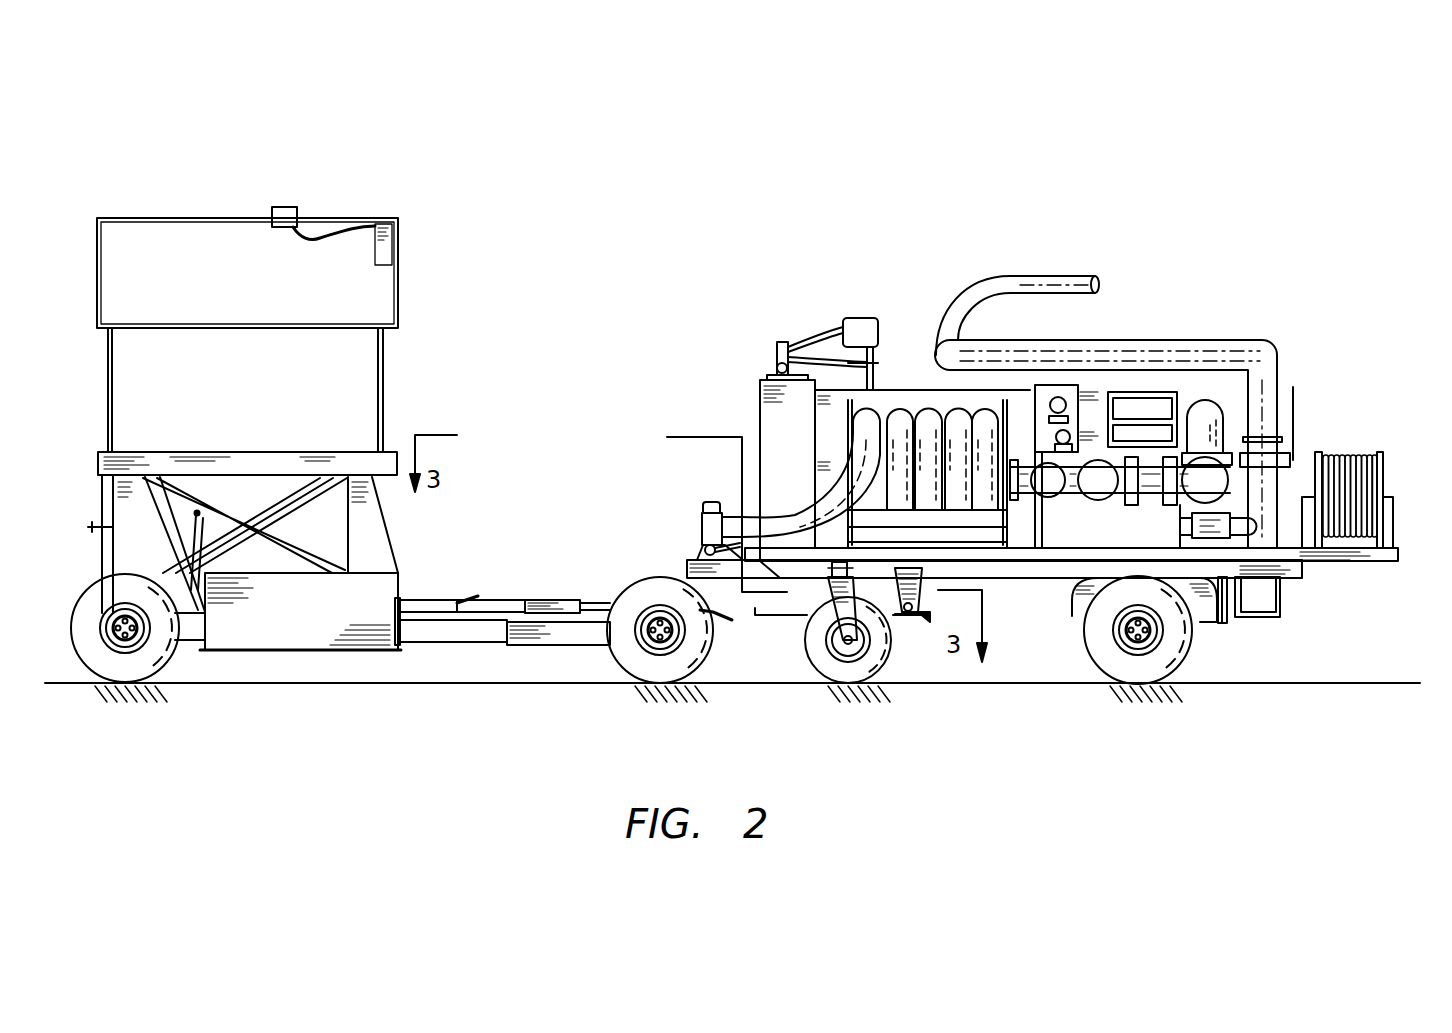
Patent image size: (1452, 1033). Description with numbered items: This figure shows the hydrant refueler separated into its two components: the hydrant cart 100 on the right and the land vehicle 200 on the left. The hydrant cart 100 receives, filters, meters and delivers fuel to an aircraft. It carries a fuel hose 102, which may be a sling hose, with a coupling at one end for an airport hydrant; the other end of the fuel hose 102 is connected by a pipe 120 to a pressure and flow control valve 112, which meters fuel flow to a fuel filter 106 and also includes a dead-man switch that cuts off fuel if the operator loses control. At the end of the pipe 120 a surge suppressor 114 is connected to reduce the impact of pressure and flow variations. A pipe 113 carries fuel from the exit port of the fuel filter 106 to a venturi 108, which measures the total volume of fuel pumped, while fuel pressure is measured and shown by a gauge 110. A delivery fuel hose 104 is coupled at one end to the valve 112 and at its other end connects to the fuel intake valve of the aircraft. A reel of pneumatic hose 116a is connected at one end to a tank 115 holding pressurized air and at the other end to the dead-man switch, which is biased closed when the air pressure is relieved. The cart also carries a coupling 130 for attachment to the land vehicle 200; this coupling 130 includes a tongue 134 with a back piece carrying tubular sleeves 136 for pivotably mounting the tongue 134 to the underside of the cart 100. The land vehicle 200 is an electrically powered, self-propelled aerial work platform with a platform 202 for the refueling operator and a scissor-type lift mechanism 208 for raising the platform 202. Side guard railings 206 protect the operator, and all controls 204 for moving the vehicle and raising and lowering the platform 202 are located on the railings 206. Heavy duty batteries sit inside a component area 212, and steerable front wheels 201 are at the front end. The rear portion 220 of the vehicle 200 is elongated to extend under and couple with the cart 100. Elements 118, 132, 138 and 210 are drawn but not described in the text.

The hydrant cart 100 is at (1302, 573).
The fuel hose 102 is at (1007, 276).
The delivery fuel hose 104 is at (893, 390).
The fuel filter 106 is at (963, 393).
The venturi 108 is at (1068, 490).
The gauge 110 is at (1058, 385).
The pressure and flow control valve 112 is at (1220, 518).
The pipe 113 is at (1222, 407).
The surge suppressor 114 is at (1072, 612).
The tank 115 is at (1258, 615).
The reel of pneumatic hose 116a is at (1340, 456).
The caster wheel 118 is at (808, 667).
The pipe 120 is at (1267, 340).
The coupling 130 is at (915, 618).
The spray bar 132 is at (920, 581).
The tongue 134 is at (777, 617).
The tubular sleeve 136 is at (928, 601).
The nozzle tip 138 is at (927, 620).
The land vehicle 200 is at (335, 652).
The steerable front wheels 201 is at (160, 650).
The platform 202 is at (231, 452).
The controls 204 is at (297, 208).
The side guard railings 206 is at (160, 218).
The scissor-type lift mechanism 208 is at (315, 525).
The trailer front wheel 210 is at (620, 667).
The component area 212 is at (397, 583).
The rear portion 220 is at (513, 600).